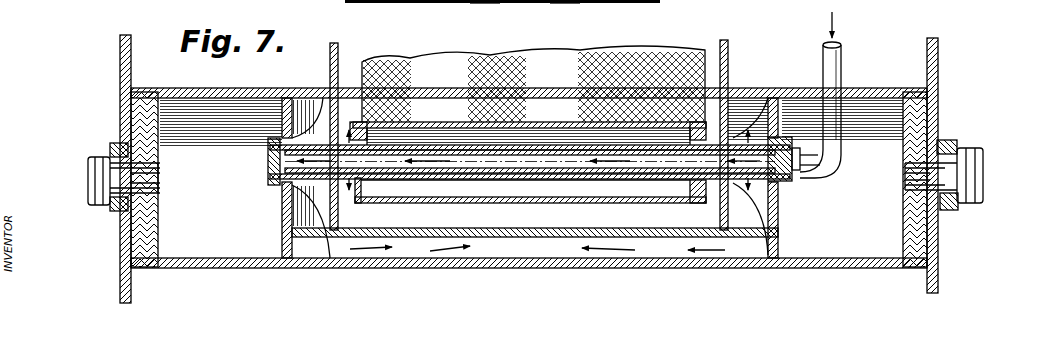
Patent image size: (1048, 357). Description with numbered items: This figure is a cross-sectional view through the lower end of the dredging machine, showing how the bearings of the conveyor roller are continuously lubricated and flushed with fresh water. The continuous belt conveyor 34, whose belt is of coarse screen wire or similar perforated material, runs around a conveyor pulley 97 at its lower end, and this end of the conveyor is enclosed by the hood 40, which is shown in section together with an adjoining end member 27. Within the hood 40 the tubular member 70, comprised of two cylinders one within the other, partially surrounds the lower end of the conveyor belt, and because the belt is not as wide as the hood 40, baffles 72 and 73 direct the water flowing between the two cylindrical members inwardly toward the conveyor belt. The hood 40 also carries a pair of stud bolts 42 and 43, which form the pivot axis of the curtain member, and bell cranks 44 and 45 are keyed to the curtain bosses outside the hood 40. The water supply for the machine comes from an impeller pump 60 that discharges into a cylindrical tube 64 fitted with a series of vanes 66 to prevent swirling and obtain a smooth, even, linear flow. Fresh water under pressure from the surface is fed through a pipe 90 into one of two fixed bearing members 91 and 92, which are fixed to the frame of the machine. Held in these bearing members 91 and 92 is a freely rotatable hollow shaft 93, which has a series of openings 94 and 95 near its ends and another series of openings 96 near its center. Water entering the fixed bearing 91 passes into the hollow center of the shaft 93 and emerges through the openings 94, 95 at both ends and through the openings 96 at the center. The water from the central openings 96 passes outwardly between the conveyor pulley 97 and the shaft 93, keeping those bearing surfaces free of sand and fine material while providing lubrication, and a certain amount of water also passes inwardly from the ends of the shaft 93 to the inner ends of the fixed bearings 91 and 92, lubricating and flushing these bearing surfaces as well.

The end block 27 is at (940, 112).
The continuous belt conveyor 34 is at (676, 54).
The hood 40 is at (122, 48).
The stud bolt 42 is at (88, 182).
The stud bolt 43 is at (984, 176).
The bell crank 44 is at (116, 150).
The bell crank 45 is at (955, 208).
The impeller pump 60 is at (440, 2).
The cylindrical tube 64 is at (559, 2).
The vanes 66 is at (485, 2).
The tubular member 70 is at (788, 92).
The baffle 72 is at (738, 140).
The baffle 73 is at (288, 100).
The pipe 90 is at (843, 60).
The fixed bearing member 91 is at (778, 185).
The fixed bearing member 92 is at (281, 190).
The hollow shaft 93 is at (270, 144).
The openings 94 is at (270, 162).
The openings 95 is at (796, 170).
The openings 96 is at (535, 162).
The conveyor pulley 97 is at (346, 142).